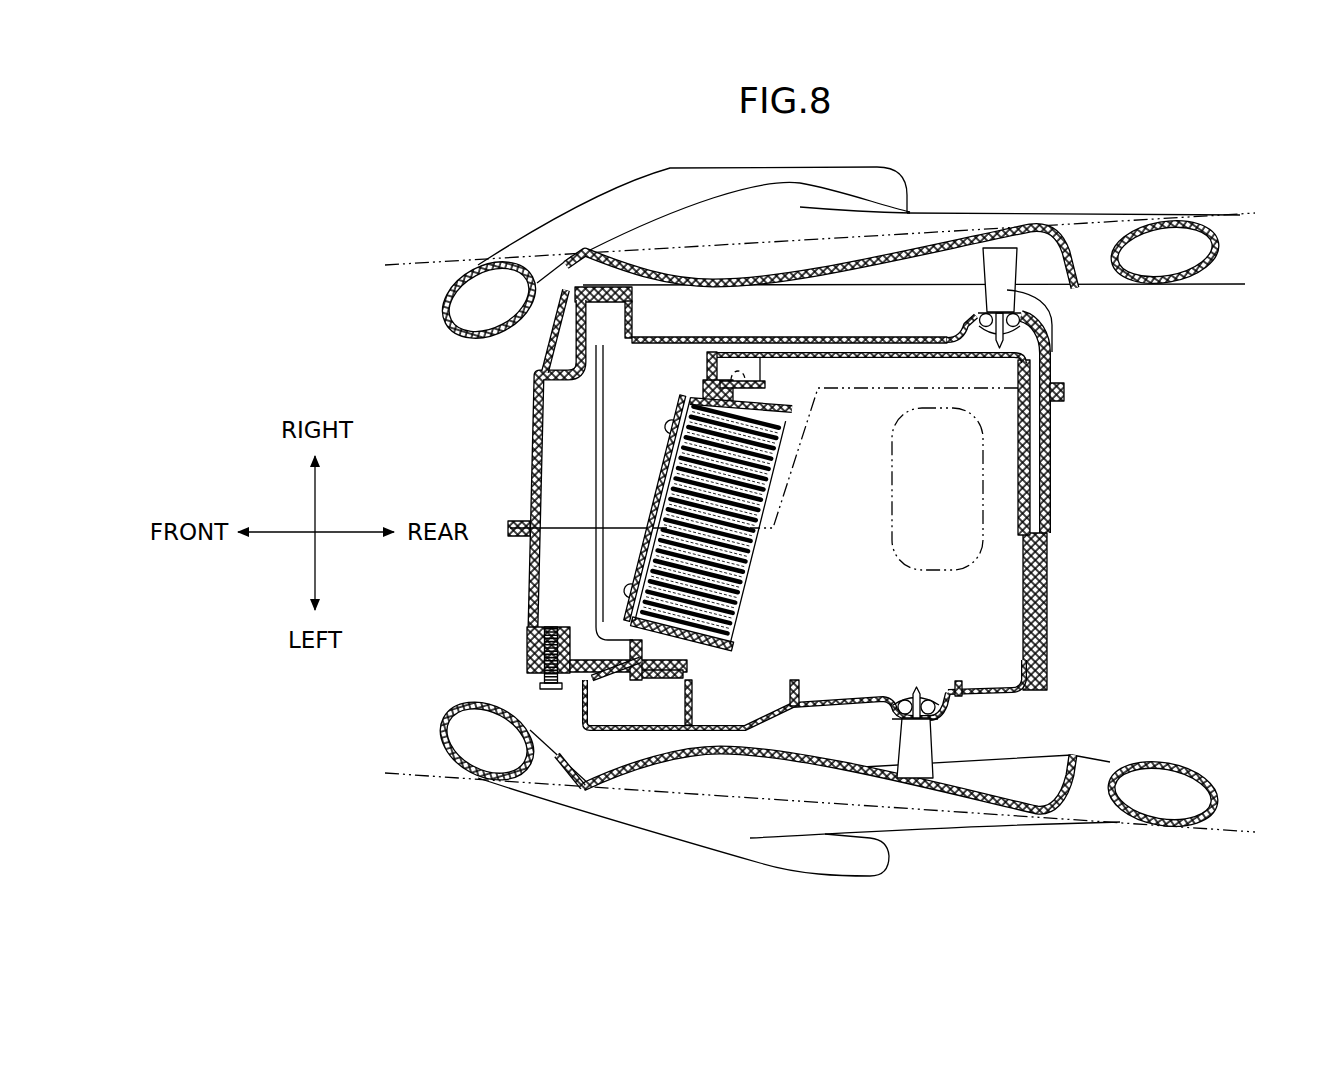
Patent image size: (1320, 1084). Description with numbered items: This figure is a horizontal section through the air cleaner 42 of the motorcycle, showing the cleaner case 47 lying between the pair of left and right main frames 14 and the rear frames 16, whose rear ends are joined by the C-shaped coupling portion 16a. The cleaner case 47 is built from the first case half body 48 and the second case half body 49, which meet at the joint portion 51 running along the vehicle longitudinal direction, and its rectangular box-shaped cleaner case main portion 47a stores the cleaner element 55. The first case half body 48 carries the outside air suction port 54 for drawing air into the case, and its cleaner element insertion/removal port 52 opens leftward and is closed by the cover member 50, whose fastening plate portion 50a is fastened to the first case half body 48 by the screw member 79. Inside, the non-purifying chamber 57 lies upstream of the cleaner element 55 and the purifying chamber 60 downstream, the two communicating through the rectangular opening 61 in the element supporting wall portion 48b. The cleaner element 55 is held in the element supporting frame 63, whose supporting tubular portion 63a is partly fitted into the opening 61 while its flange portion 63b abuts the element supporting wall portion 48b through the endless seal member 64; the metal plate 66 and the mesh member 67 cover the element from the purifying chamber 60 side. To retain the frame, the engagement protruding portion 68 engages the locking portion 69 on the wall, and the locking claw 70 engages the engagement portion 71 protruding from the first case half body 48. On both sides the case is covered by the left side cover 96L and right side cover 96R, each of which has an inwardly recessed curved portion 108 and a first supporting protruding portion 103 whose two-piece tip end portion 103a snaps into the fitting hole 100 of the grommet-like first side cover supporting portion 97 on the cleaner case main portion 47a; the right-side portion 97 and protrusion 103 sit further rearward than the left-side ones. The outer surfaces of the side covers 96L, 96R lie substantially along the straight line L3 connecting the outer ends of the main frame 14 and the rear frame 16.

The main frame 14 is at (572, 232).
The rear frame 16 is at (1007, 835).
The coupling portion 16a is at (1033, 227).
The air cleaner 42 is at (1050, 562).
The cleaner case 47 is at (777, 742).
The cleaner case main portion 47a is at (1050, 613).
The first case half body 48 is at (524, 567).
The element supporting wall portion 48b is at (855, 358).
The second case half body 49 is at (524, 437).
The cover member 50 is at (800, 710).
The fastening plate portion 50a is at (530, 678).
The joint portion 51 is at (577, 527).
The cleaner element insertion/removal port 52 is at (1013, 660).
The outside air suction port 54 is at (978, 460).
The cleaner element 55 is at (732, 523).
The non-purifying chamber 57 is at (868, 441).
The purifying chamber 60 is at (618, 492).
The opening 61 is at (650, 577).
The element supporting frame 63 is at (713, 645).
The supporting tubular portion 63a is at (768, 380).
The flange portion 63b is at (636, 648).
The seal member 64 is at (722, 354).
The metal plate 66 is at (727, 487).
The mesh member 67 is at (667, 475).
The engagement protruding portion 68 is at (745, 350).
The locking portion 69 is at (753, 368).
The locking claw 70 is at (649, 678).
The engagement portion 71 is at (608, 678).
The screw member 79 is at (550, 628).
The right side cover 96R is at (910, 237).
The left side cover 96L is at (753, 838).
The first side cover supporting portion 97 is at (1020, 314).
The fitting hole 100 is at (1018, 343).
The first supporting protruding portion 103 is at (1010, 273).
The tip end portion 103a is at (996, 343).
The curved portion 108 is at (697, 282).
The straight line L3 is at (472, 258).